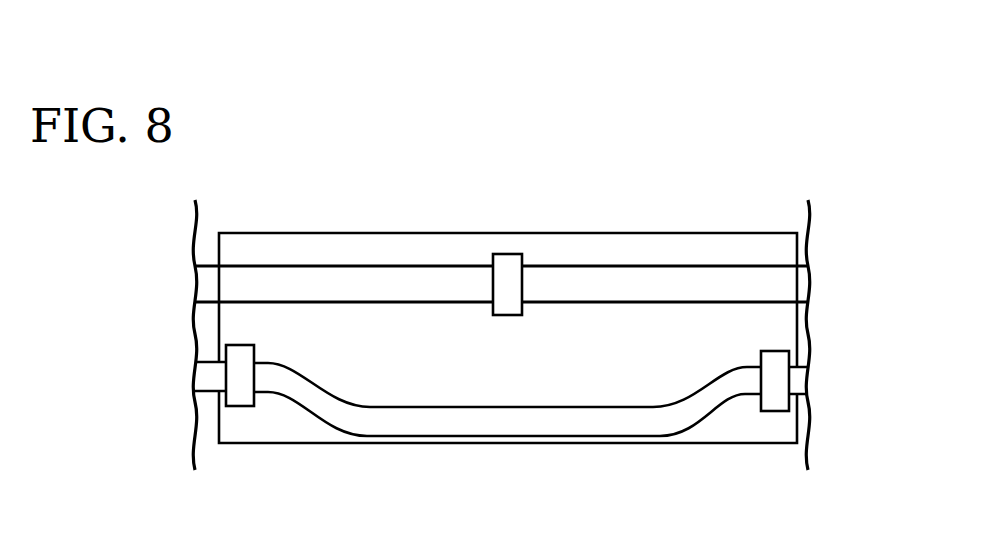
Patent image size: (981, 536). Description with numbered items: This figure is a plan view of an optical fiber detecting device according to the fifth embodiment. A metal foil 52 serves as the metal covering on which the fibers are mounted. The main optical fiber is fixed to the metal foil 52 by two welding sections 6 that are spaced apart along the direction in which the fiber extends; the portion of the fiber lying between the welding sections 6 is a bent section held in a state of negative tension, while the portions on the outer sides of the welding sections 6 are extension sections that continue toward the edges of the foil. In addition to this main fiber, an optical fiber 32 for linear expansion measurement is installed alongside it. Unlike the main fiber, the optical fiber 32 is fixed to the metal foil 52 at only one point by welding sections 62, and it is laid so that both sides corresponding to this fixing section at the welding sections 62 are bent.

The optical fiber for linear expansion measurement 32 is at (288, 276).
The metal foil 52 is at (377, 243).
The welding sections 62 is at (508, 254).
The welding sections 6 is at (240, 407).